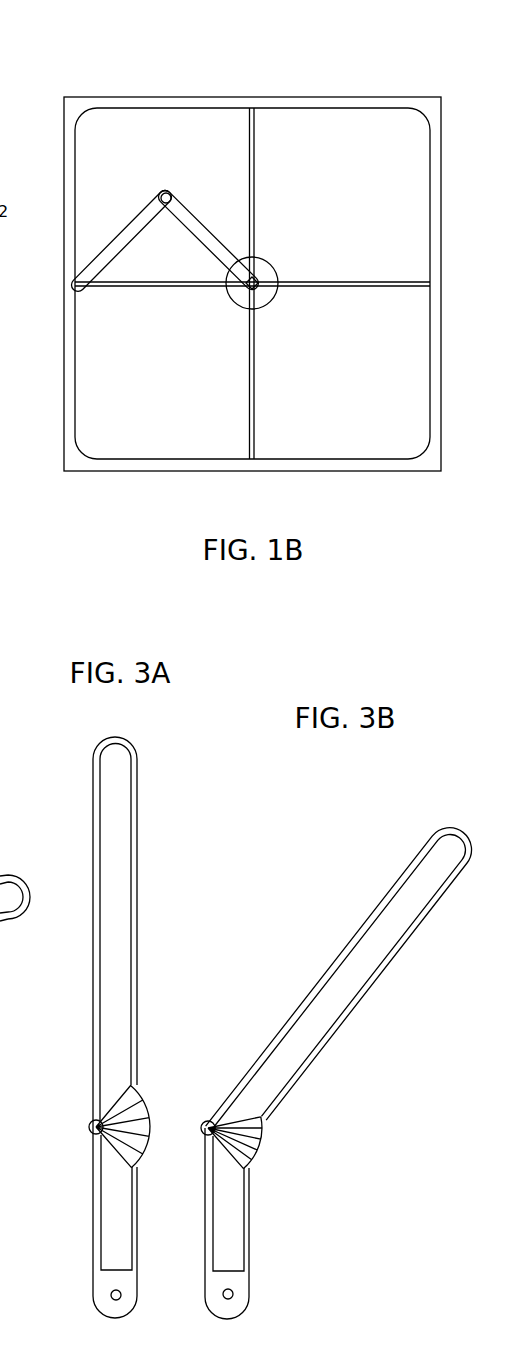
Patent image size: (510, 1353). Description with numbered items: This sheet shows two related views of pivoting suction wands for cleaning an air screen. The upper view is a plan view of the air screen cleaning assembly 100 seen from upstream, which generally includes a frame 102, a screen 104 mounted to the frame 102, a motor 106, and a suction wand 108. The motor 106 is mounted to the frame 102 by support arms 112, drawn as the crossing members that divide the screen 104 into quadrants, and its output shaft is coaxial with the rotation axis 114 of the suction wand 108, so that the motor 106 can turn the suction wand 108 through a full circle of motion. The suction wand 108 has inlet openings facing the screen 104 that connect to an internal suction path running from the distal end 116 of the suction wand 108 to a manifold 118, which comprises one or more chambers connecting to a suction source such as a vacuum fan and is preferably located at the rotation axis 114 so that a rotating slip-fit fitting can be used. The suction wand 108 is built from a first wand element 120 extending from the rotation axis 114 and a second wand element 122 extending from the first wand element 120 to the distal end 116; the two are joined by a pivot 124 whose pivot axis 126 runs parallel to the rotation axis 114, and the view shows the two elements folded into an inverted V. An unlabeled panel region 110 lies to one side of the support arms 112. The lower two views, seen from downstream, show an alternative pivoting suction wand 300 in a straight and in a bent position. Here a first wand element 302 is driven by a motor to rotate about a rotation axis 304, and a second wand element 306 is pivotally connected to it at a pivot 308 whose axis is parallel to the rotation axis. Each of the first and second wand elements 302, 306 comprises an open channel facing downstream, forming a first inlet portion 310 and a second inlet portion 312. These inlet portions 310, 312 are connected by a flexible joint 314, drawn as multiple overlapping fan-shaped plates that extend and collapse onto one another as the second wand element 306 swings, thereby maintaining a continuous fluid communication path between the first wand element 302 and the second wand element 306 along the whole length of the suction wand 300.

In FIG. 1B, the air screen cleaning assembly 100 is at (128, 57).
In FIG. 1B, the frame 102 is at (82, 107).
In FIG. 1B, the screen 104 is at (193, 122).
In FIG. 1B, the motor 106 is at (268, 268).
In FIG. 1B, the suction wand 108 is at (198, 205).
In FIG. 1B, the second panel 110 is at (323, 110).
In FIG. 1B, the support arms 112 is at (248, 408).
In FIG. 1B, the rotation axis 114 is at (278, 300).
In FIG. 1B, the distal end 116 is at (78, 282).
In FIG. 1B, the manifold 118 is at (232, 290).
In FIG. 1B, the first wand element 120 is at (210, 232).
In FIG. 1B, the second wand element 122 is at (130, 228).
In FIG. 1B, the pivot 124 is at (166, 205).
In FIG. 1B, the pivot axis 126 is at (165, 192).
In FIG. 3A, the pivoting suction wand 300 is at (172, 795).
In FIG. 3B, the pivoting suction wand 300 is at (327, 905).
In FIG. 3A, the first wand element 302 is at (93, 1213).
In FIG. 3B, the first wand element 302 is at (250, 1210).
In FIG. 3A, the rotation axis 304 is at (112, 1300).
In FIG. 3B, the rotation axis 304 is at (232, 1293).
In FIG. 3A, the second wand element 306 is at (137, 937).
In FIG. 3B, the second wand element 306 is at (303, 1002).
In FIG. 3A, the pivot 308 is at (90, 1127).
In FIG. 3B, the pivot 308 is at (204, 1120).
In FIG. 3A, the first inlet portion 310 is at (115, 1232).
In FIG. 3B, the first inlet portion 310 is at (232, 1190).
In FIG. 3A, the second inlet portion 312 is at (125, 898).
In FIG. 3B, the second inlet portion 312 is at (375, 952).
In FIG. 3A, the flexible joint 314 is at (148, 1120).
In FIG. 3B, the flexible joint 314 is at (257, 1143).